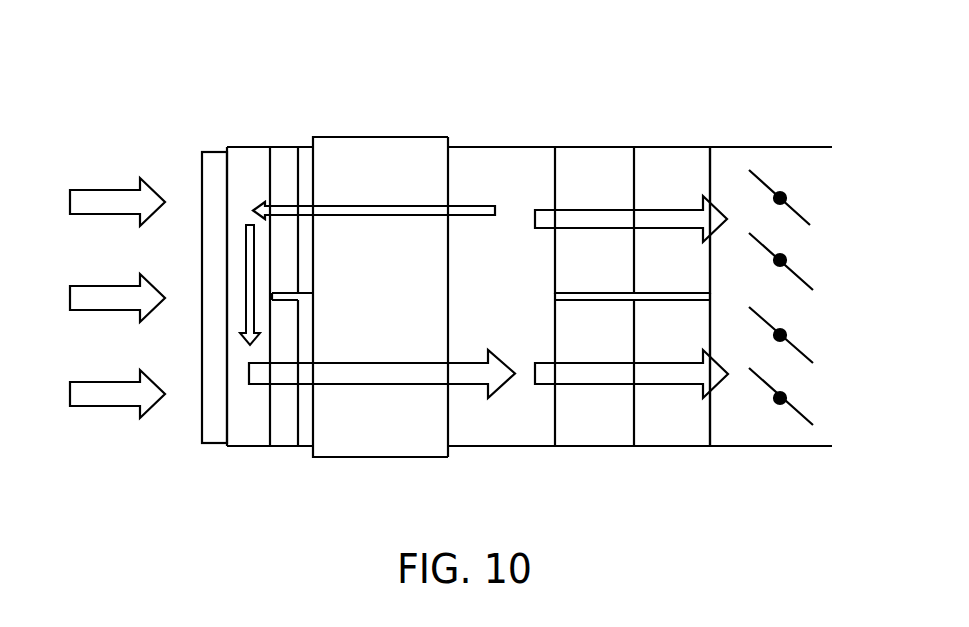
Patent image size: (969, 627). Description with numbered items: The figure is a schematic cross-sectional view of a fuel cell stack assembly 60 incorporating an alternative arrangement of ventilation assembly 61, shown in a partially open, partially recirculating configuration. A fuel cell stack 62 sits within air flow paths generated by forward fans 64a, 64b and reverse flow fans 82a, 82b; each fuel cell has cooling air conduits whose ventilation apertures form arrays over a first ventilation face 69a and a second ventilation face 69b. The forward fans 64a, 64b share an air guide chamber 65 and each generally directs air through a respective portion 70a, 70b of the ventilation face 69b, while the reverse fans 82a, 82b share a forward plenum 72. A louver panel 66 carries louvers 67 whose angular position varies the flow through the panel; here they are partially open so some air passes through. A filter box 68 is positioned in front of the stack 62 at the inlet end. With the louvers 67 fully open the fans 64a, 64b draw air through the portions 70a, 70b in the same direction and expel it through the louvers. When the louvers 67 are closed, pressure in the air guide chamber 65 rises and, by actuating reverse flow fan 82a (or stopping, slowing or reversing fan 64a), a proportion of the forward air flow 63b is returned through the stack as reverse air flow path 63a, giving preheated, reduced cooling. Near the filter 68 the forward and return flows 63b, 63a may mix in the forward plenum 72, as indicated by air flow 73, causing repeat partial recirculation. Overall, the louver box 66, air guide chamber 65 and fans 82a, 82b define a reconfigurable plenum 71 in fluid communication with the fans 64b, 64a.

The fuel cell stack assembly 60 is at (130, 75).
The ventilation assembly 61 is at (590, 107).
The fuel cell stack 62 is at (348, 147).
The reverse air flow path 63a is at (408, 207).
The air flow 63b is at (375, 377).
The forward fan 64a is at (623, 195).
The forward fan 64b is at (628, 347).
The air guide chamber 65 is at (525, 310).
The louver panel 66 is at (815, 145).
The louvers 67 is at (813, 222).
The filter box 68 is at (215, 177).
The first ventilation face 69a is at (312, 170).
The second ventilation face 69b is at (447, 172).
The portion of ventilation face 70a is at (447, 248).
The portion of ventilation face 70b is at (447, 343).
The plenum 71 is at (723, 175).
The forward plenum 72 is at (250, 432).
The air flow 73 is at (248, 265).
The reverse flow fan 82a is at (278, 168).
The reverse flow fan 82b is at (285, 432).